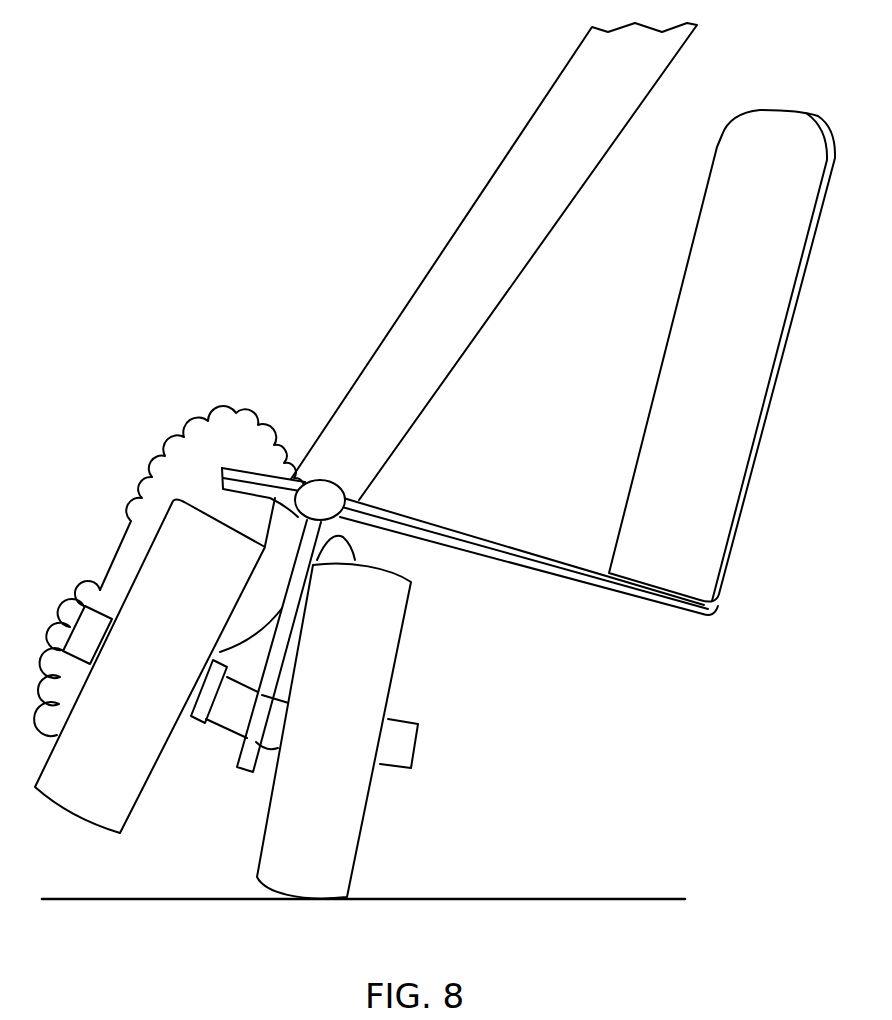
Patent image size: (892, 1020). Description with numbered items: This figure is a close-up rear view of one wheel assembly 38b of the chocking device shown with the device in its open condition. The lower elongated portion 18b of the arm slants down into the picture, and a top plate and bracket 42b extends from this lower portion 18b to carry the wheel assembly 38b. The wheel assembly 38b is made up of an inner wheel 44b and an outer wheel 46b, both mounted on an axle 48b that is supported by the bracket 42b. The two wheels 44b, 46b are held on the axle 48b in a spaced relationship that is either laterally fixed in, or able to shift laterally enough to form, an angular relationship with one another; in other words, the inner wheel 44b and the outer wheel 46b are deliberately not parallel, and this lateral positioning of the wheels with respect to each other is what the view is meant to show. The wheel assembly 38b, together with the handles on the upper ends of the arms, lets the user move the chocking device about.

The lower elongated portion 18b is at (418, 299).
The wheel assembly 38b is at (282, 679).
The top plate and bracket 42b is at (297, 585).
The inner wheel 44b is at (353, 830).
The outer wheel 46b is at (75, 802).
The axle 48b is at (205, 733).